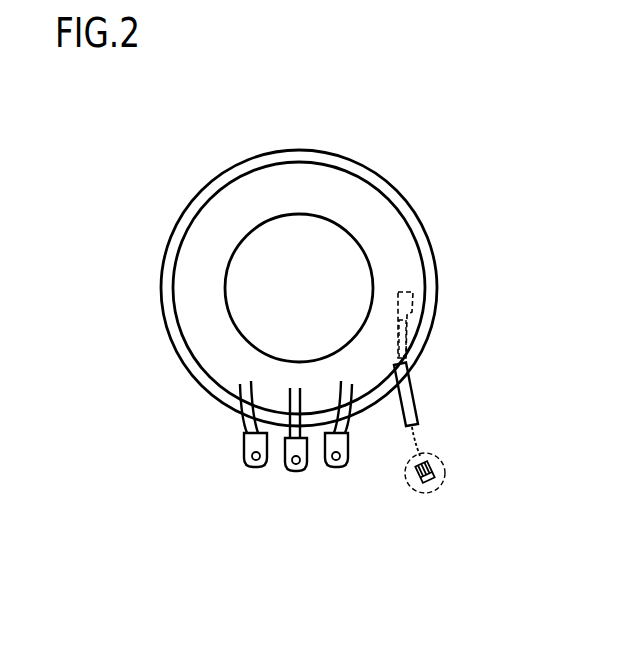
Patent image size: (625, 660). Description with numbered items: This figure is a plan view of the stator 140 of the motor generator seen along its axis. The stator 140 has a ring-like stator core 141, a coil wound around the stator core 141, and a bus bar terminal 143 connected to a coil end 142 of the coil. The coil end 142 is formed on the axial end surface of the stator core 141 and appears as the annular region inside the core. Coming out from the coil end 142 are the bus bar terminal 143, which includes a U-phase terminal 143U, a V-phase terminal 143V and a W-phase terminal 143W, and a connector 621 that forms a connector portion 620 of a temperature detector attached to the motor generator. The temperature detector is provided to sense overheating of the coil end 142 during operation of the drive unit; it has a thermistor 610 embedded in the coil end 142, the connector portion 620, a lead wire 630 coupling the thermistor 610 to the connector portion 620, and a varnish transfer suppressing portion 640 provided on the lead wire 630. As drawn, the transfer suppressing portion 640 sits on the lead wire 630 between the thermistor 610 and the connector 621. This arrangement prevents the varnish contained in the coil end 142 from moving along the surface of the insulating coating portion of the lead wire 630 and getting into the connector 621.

The stator 140 is at (358, 98).
The stator core 141 is at (327, 152).
The coil end 142 is at (268, 192).
The bus bar terminal 143 is at (295, 493).
The U-phase terminal 143U is at (254, 461).
The V-phase terminal 143V is at (296, 465).
The W-phase terminal 143W is at (344, 457).
The thermistor 610 is at (402, 305).
The lead wire 630 is at (403, 339).
The varnish transfer suppressing portion 640 is at (408, 393).
The connector portion 620 is at (440, 457).
The connector 621 is at (436, 483).